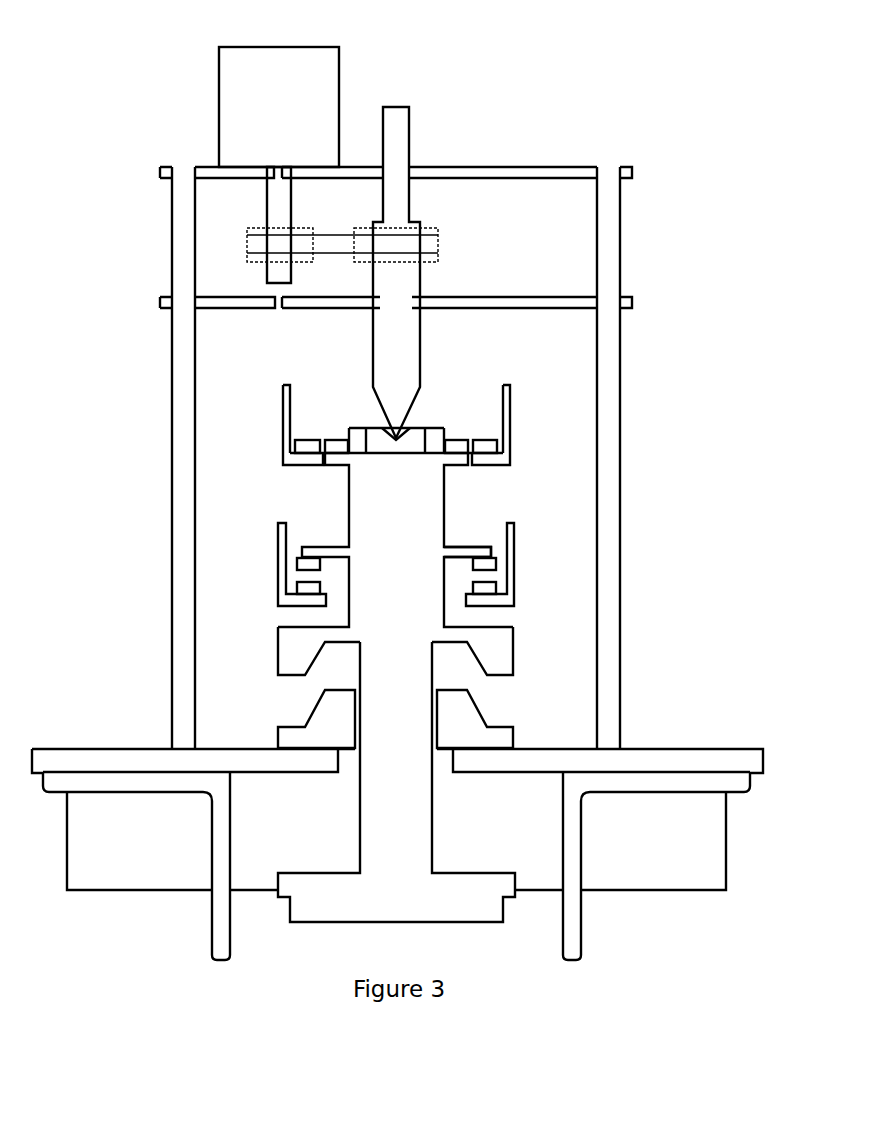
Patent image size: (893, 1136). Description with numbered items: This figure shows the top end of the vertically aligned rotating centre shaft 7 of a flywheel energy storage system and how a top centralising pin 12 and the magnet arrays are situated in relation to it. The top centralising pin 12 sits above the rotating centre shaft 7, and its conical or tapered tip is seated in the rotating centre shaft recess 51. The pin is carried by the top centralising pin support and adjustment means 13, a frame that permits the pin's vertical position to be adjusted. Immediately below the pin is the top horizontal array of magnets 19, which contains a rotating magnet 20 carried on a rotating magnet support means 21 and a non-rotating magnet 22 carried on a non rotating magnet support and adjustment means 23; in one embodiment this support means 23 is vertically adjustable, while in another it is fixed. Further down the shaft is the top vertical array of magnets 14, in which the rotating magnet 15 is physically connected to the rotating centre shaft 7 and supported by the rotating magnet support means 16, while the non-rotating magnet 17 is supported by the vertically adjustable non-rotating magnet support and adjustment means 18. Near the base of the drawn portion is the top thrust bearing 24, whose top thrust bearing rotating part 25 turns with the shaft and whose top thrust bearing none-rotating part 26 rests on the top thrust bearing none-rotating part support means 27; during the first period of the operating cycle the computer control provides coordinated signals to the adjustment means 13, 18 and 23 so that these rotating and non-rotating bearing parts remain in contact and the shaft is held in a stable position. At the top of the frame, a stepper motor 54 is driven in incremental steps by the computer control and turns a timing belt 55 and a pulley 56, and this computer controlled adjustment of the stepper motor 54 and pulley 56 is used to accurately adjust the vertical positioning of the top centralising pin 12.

The rotating centre shaft 7 is at (410, 841).
The top centralising pin 12 is at (401, 137).
The top centralising pin support and adjustment means 13 is at (608, 243).
The top vertical array of magnets 14 is at (308, 588).
The rotating magnet 15 is at (486, 563).
The rotating magnet support means 16 is at (458, 550).
The non-rotating magnet 17 is at (486, 588).
The non-rotating magnet support and adjustment means 18 is at (513, 598).
The top horizontal array of magnets 19 is at (340, 447).
The rotating magnet 20 is at (451, 446).
The rotating magnet support means 21 is at (340, 455).
The non-rotating magnet 22 is at (490, 445).
The non rotating magnet support and adjustment means 23 is at (506, 395).
The top thrust bearing 24 is at (483, 735).
The top thrust bearing rotating part 25 is at (288, 643).
The top thrust bearing none-rotating part 26 is at (332, 737).
The top thrust bearing none-rotating part support means 27 is at (572, 769).
The rotating centre shaft recess 51 is at (398, 439).
The stepper motor 54 is at (310, 83).
The timing belt 55 is at (332, 248).
The pulley 1 56 is at (249, 252).